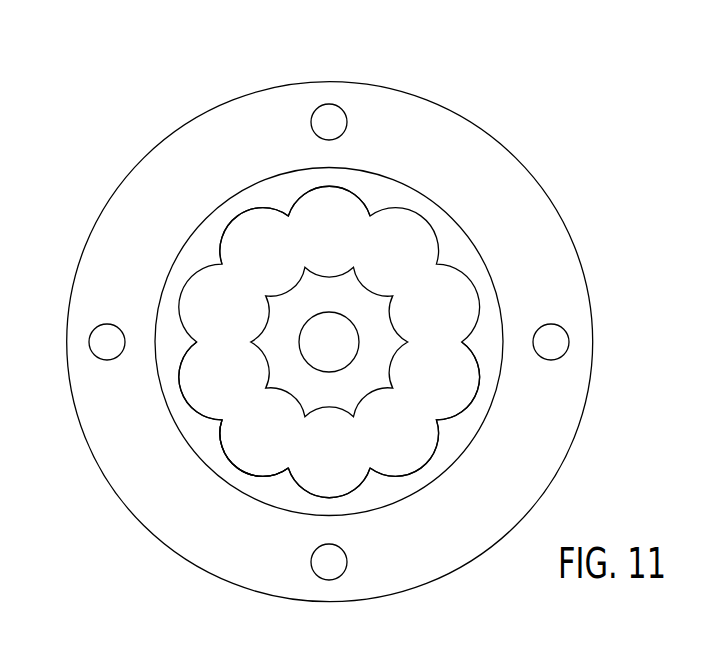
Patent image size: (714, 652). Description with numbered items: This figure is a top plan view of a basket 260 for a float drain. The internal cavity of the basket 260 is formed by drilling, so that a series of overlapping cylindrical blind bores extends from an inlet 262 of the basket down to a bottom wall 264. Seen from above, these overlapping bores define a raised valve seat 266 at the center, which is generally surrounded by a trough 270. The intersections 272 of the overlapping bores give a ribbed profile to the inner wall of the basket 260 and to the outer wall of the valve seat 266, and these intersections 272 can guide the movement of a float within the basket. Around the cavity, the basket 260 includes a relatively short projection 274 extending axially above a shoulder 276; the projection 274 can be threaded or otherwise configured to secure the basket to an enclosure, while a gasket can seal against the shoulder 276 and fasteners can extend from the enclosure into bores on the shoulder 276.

The basket 260 is at (68, 172).
The inlet 262 is at (331, 224).
The bottom wall 264 is at (320, 470).
The raised valve seat 266 is at (255, 320).
The trough 270 is at (258, 442).
The intersections 272 is at (287, 217).
The projection 274 is at (470, 242).
The shoulder 276 is at (510, 420).